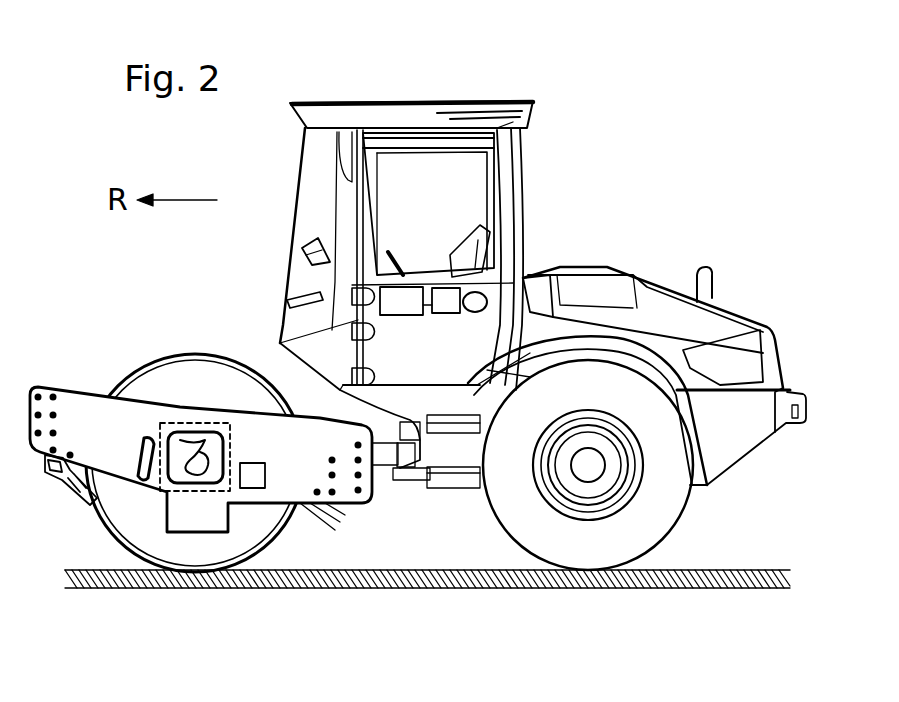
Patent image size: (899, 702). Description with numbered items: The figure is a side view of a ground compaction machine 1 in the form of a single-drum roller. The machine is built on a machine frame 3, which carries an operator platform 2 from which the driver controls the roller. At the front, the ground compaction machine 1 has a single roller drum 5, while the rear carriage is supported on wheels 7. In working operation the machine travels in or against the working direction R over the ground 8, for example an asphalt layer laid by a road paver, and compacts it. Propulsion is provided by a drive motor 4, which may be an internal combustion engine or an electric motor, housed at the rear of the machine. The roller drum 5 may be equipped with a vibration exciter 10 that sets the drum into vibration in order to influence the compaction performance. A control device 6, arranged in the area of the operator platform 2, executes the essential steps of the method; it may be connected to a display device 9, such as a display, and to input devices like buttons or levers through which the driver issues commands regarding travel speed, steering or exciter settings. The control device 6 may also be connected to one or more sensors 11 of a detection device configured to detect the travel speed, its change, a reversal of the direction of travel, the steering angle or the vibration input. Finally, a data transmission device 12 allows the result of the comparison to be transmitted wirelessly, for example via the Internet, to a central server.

The ground compaction machine 1 is at (418, 342).
The operator platform 2 is at (443, 172).
The machine frame 3 is at (603, 290).
The drive motor 4 is at (663, 345).
The roller drum 5 is at (148, 540).
The control device 6 is at (398, 290).
The wheels 7 is at (588, 538).
The ground 8 is at (320, 580).
The display device 9 is at (318, 252).
The vibration exciter 10 is at (191, 494).
The sensor 11 is at (253, 488).
The data transmission device 12 is at (444, 295).